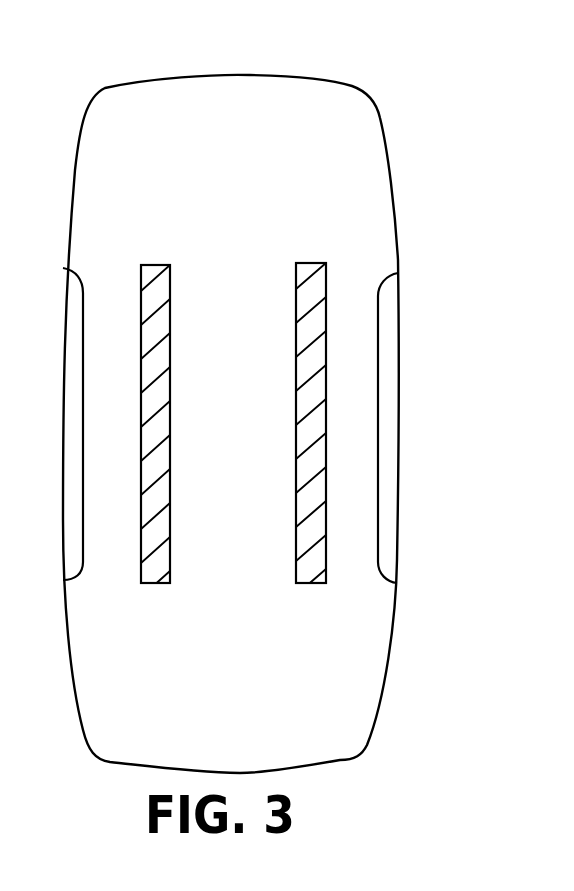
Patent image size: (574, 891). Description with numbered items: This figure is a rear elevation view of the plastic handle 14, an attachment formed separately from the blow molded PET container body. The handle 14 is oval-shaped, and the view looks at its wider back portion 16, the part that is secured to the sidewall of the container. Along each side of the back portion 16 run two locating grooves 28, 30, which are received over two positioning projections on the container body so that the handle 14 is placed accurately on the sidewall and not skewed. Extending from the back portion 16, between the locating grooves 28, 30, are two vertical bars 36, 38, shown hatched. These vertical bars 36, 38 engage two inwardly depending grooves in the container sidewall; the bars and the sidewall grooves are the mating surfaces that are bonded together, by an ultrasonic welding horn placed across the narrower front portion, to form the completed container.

The handle 14 is at (343, 81).
The back portion 16 is at (331, 142).
The locating groove 28 is at (390, 300).
The locating groove 30 is at (75, 318).
The vertical bar 36 is at (298, 293).
The vertical bar 38 is at (170, 391).